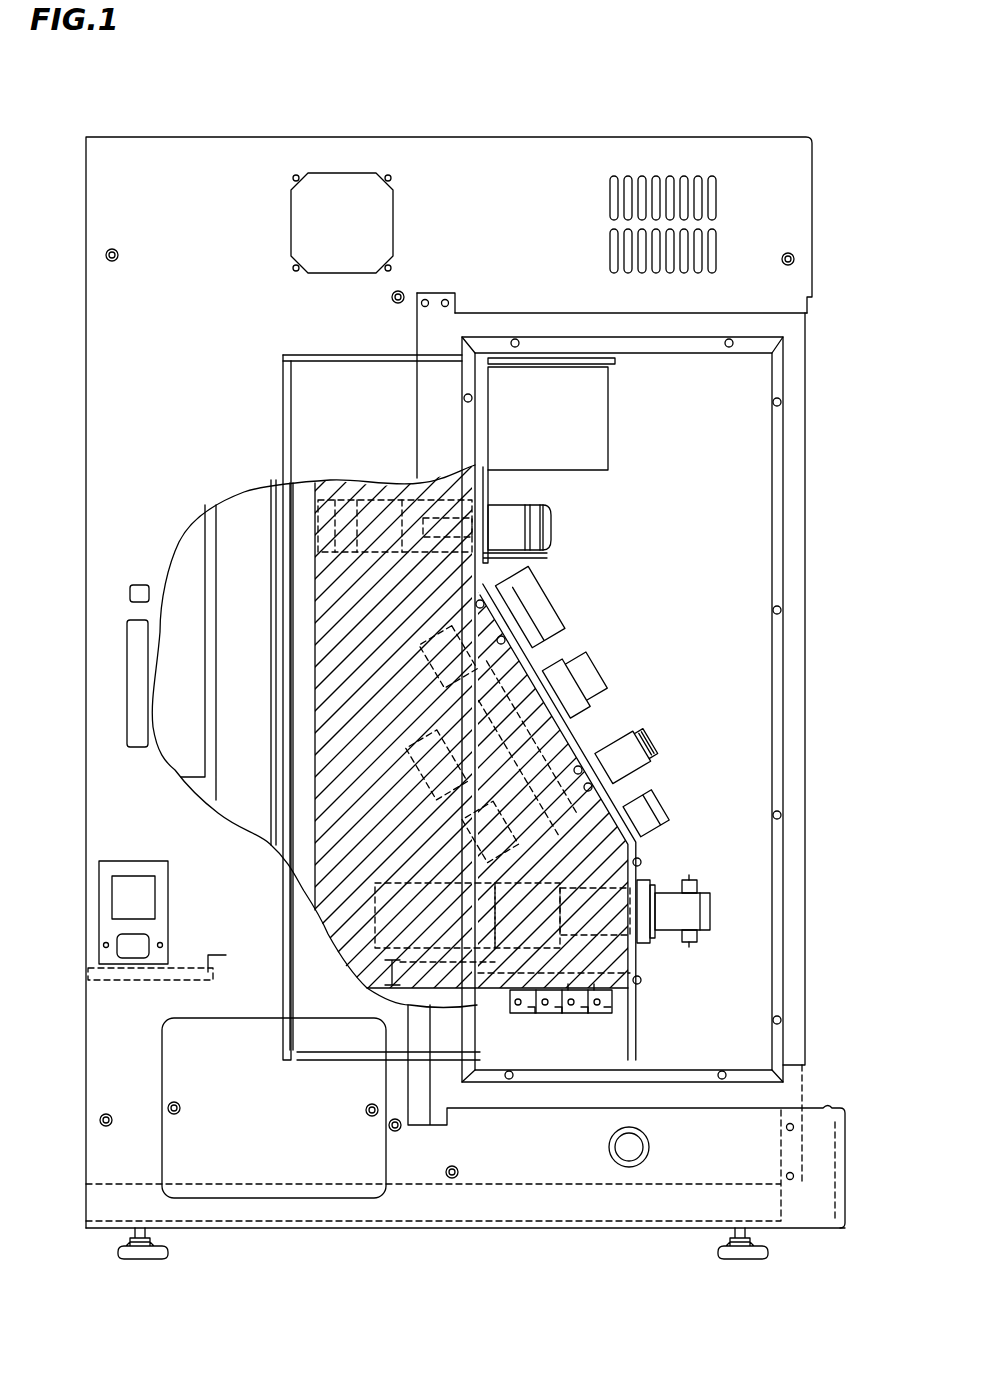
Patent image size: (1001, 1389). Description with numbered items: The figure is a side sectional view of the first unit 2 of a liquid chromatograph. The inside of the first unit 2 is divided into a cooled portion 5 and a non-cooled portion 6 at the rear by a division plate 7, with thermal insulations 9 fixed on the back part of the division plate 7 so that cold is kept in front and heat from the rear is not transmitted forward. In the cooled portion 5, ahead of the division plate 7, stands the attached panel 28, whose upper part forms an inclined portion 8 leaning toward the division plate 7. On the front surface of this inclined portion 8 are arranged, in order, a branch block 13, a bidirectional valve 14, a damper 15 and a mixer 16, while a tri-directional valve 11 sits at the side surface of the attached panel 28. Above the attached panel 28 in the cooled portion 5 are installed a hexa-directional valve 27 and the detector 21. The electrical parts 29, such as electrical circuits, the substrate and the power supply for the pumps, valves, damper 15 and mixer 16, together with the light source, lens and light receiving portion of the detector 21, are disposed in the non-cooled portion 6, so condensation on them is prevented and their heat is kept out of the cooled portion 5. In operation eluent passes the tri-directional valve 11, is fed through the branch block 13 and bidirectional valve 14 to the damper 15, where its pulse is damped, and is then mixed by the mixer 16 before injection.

The first unit 2 is at (808, 64).
The cooled portion 5 is at (710, 633).
The non-cooled portion 6 is at (306, 636).
The division plate 7 is at (522, 558).
The inclined portion 8 is at (593, 737).
The thermal insulations 9 is at (413, 870).
The tri-directional valve 11 is at (613, 1003).
The branch block 13 is at (647, 808).
The bidirectional valve 14 is at (637, 757).
The damper 15 is at (585, 677).
The mixer 16 is at (552, 597).
The detector 21 is at (585, 410).
The hexa-directional valve 27 is at (552, 523).
The attached panel 28 is at (712, 910).
The electrical parts 29 is at (237, 702).